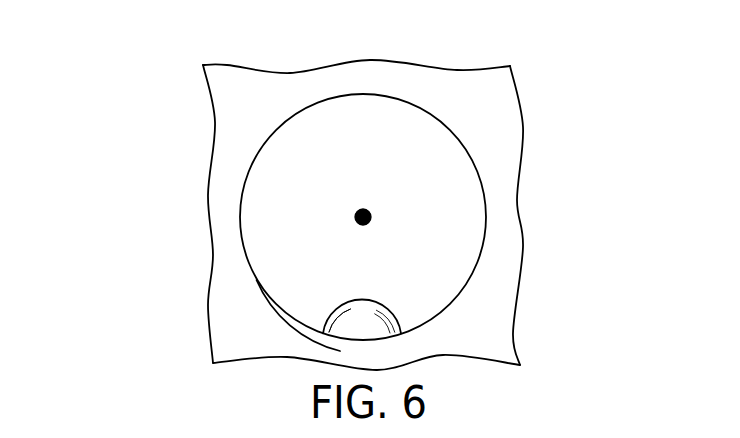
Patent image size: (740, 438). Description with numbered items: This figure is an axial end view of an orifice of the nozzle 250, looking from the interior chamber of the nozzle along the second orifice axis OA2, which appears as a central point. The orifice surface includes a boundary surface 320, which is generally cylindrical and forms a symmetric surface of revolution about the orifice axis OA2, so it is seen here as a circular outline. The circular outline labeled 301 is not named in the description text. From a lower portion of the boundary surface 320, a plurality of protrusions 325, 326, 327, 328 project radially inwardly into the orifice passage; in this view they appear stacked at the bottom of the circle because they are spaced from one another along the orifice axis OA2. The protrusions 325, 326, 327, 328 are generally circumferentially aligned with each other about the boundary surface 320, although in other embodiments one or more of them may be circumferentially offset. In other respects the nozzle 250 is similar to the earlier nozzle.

The nozzle 250 is at (167, 97).
The circular aperture 301 is at (457, 140).
The second orifice axis OA2 is at (355, 212).
The boundary surface 320 is at (282, 305).
The protrusion 325 is at (352, 327).
The protrusion 326 is at (215, 273).
The protrusion 327 is at (215, 273).
The protrusion 328 is at (362, 298).